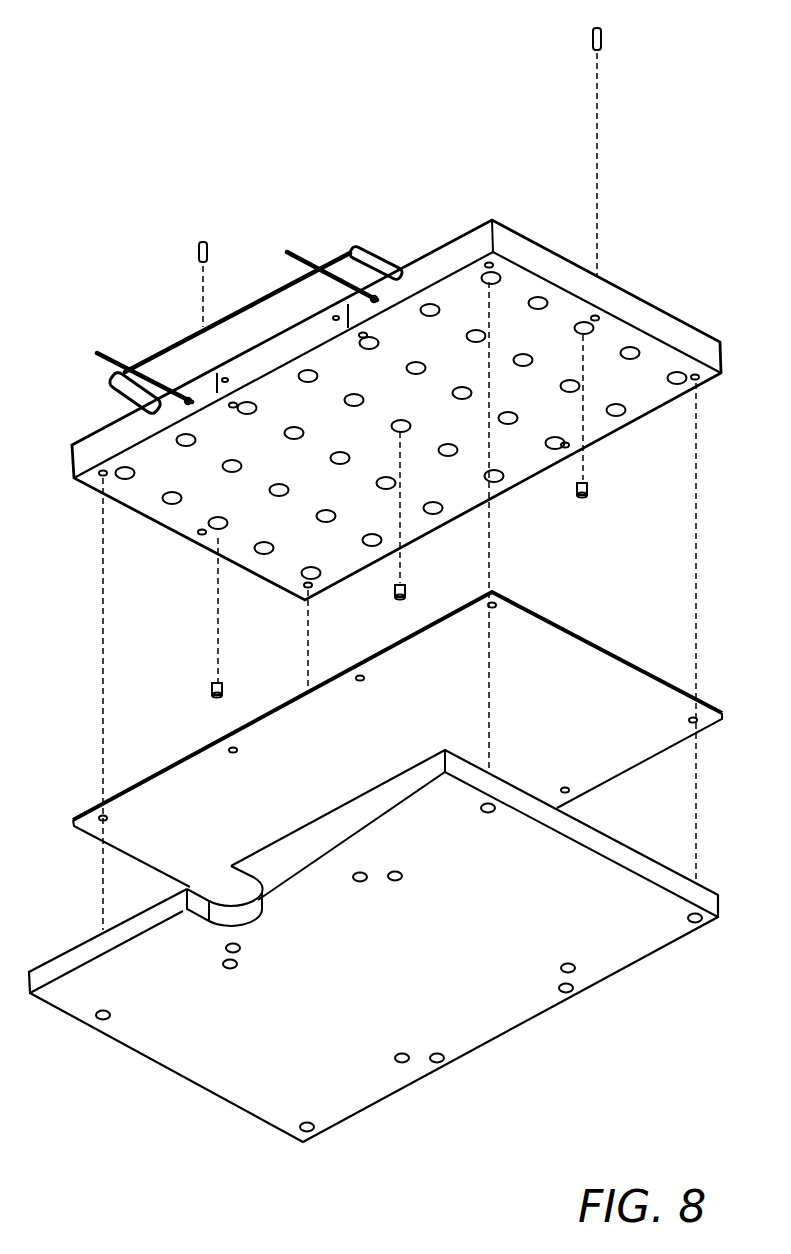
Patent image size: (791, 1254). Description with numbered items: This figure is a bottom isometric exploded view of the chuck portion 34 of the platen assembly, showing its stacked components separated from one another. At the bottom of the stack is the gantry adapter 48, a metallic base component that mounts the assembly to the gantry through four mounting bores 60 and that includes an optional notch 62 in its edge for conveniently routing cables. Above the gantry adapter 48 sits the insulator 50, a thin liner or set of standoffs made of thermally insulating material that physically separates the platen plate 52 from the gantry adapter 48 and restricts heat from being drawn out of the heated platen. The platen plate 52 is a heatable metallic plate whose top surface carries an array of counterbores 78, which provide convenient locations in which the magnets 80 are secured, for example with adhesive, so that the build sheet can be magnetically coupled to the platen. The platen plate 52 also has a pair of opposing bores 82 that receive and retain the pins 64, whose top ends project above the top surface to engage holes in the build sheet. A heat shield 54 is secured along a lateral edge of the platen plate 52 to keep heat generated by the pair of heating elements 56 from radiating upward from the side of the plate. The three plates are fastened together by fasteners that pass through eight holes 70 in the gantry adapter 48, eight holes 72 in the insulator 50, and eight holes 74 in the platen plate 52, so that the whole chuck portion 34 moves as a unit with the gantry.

The chuck portion 34 is at (150, 128).
The gantry adapter 48 is at (610, 844).
The insulator 50 is at (590, 635).
The platen plate 52 is at (513, 247).
The heat shield 54 is at (382, 252).
The heating elements 56 is at (110, 352).
The mounting bores 60 is at (396, 890).
The notch 62 is at (217, 862).
The pins 64 is at (197, 250).
The holes 70 is at (97, 1027).
The holes 72 is at (708, 712).
The holes 74 is at (705, 390).
The counterbores 78 is at (673, 392).
The magnets 80 is at (210, 690).
The bores 82 is at (615, 318).